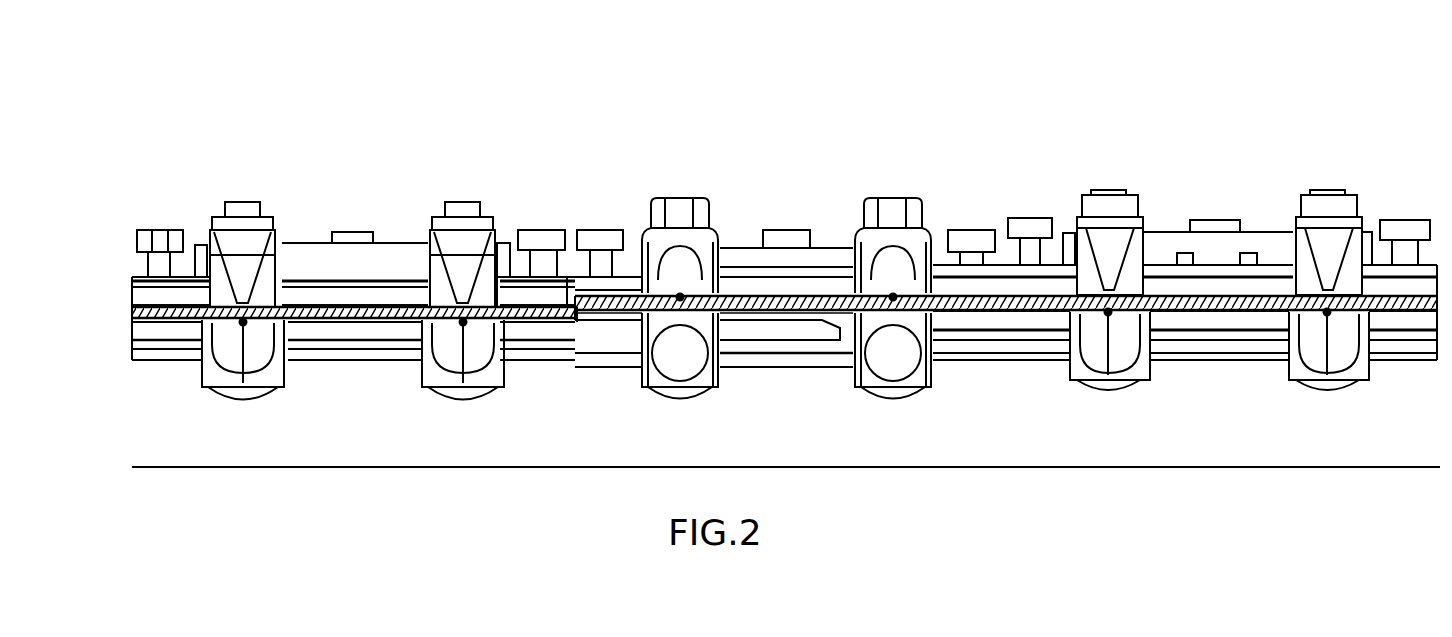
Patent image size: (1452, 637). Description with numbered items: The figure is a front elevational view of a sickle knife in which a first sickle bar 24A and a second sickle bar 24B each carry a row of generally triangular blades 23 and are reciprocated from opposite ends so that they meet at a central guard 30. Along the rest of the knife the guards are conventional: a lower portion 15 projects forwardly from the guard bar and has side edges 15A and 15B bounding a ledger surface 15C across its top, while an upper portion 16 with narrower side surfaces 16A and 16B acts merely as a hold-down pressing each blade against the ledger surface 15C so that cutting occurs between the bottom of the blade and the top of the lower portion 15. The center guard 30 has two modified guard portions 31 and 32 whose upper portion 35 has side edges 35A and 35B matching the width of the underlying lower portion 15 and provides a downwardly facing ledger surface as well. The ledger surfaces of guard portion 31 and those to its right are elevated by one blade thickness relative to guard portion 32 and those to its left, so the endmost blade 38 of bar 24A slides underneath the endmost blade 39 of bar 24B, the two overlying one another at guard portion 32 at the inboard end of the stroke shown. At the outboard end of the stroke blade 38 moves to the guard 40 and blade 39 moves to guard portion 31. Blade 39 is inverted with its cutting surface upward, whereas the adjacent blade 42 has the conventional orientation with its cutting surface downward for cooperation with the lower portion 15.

The center guard 30 is at (840, 178).
The blades 23 is at (384, 283).
The first sickle bar 24A is at (286, 262).
The second sickle bar 24B is at (1260, 288).
The endmost blade of the second sickle bar 39 is at (575, 298).
The endmost blade of the first sickle bar 38 is at (575, 322).
The upper portion 35 is at (636, 298).
The side edge of upper portion 35A is at (622, 316).
The side edge of upper portion 35B is at (729, 312).
The lower portion 15 is at (447, 382).
The side edge of lower portion 15A is at (288, 292).
The side edge of lower portion 15B is at (200, 327).
The ledger surface 15C is at (250, 350).
The guard 40 is at (484, 367).
The guard portion 32 is at (717, 227).
The guard portion 31 is at (905, 265).
The upper portion 16 is at (1112, 258).
The side surface of upper portion 16A is at (1143, 278).
The side surface of upper portion 16B is at (1075, 275).
The blade 42 is at (962, 310).